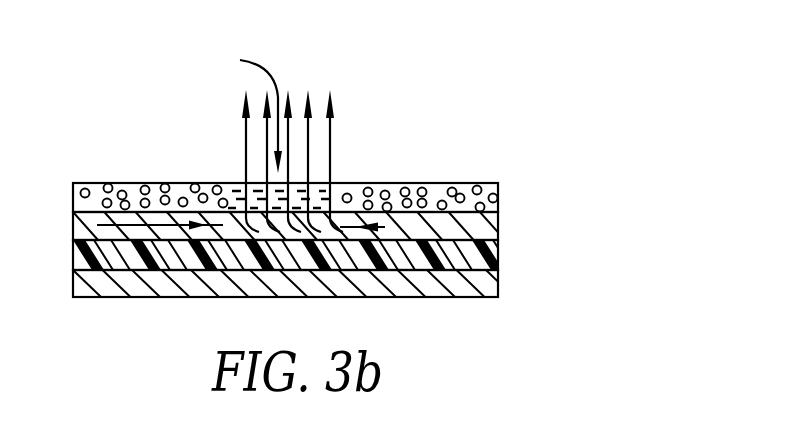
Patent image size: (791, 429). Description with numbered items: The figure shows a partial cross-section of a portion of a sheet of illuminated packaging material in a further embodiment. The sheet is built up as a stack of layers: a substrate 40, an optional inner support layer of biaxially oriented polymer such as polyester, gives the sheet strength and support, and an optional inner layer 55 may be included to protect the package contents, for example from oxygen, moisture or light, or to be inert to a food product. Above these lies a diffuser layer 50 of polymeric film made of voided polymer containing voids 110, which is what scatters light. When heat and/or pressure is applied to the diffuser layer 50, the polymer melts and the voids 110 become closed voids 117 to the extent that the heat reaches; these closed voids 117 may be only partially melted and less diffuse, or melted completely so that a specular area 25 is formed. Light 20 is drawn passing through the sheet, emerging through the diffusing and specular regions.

The emitted light 20 is at (335, 108).
The specular area 25 is at (241, 109).
The substrate 40 is at (486, 261).
The diffuser layer 50 is at (343, 160).
The inner layer 55 is at (482, 288).
The voids 110 is at (115, 186).
The closed voids 117 is at (297, 191).